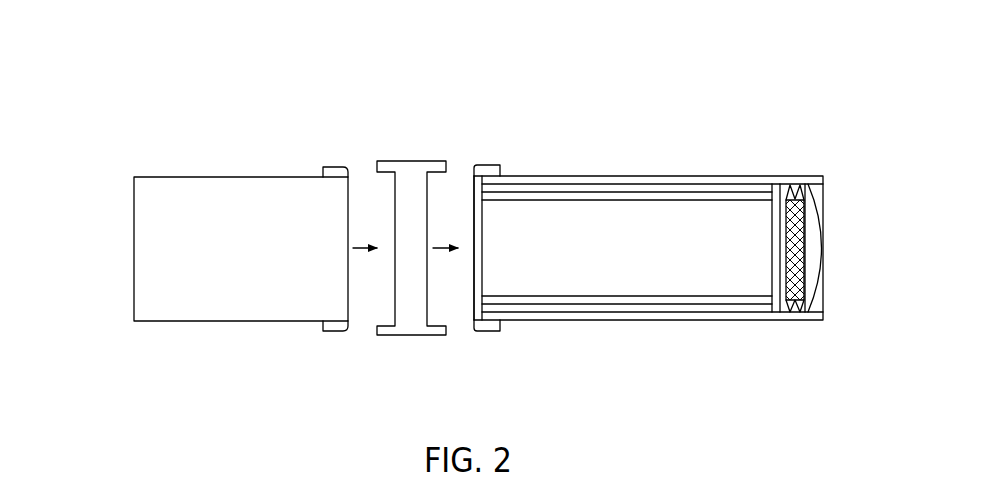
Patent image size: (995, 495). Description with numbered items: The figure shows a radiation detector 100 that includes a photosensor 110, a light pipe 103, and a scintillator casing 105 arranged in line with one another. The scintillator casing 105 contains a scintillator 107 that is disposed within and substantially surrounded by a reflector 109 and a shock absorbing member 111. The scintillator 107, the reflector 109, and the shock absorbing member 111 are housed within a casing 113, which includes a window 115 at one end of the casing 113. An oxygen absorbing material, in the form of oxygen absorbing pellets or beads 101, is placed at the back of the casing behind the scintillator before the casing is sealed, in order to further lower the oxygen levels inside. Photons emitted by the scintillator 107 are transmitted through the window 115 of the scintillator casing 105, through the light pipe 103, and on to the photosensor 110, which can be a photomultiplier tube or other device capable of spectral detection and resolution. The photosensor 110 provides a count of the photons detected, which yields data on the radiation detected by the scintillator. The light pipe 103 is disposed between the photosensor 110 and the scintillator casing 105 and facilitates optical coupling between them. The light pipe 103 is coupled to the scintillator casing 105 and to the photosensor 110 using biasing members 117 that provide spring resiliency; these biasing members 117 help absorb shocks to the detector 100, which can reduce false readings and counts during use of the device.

The radiation detector 100 is at (141, 123).
The oxygen absorbing pellets or beads 101 is at (796, 200).
The light pipe 103 is at (402, 337).
The scintillator casing 105 is at (695, 348).
The scintillator 107 is at (632, 256).
The reflector 109 is at (710, 200).
The photosensor 110 is at (197, 323).
The shock absorbing member 111 is at (630, 192).
The casing 113 is at (563, 176).
The window 115 is at (473, 190).
The biasing members 117 is at (332, 167).